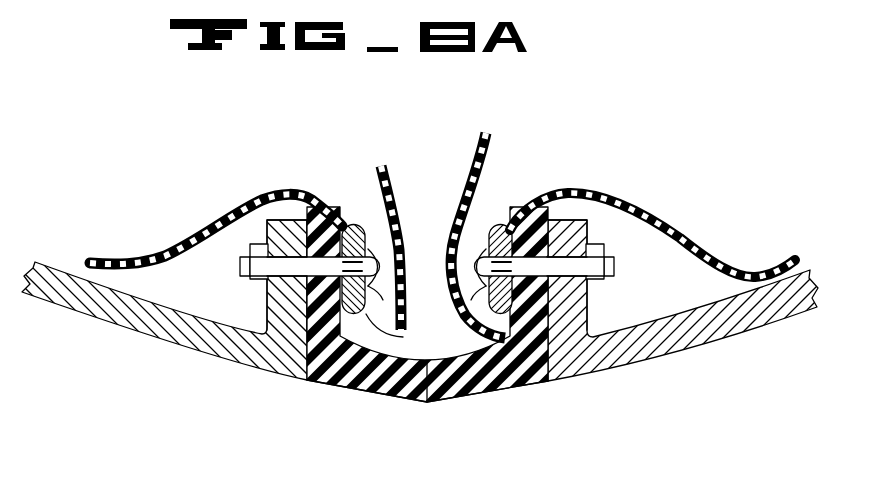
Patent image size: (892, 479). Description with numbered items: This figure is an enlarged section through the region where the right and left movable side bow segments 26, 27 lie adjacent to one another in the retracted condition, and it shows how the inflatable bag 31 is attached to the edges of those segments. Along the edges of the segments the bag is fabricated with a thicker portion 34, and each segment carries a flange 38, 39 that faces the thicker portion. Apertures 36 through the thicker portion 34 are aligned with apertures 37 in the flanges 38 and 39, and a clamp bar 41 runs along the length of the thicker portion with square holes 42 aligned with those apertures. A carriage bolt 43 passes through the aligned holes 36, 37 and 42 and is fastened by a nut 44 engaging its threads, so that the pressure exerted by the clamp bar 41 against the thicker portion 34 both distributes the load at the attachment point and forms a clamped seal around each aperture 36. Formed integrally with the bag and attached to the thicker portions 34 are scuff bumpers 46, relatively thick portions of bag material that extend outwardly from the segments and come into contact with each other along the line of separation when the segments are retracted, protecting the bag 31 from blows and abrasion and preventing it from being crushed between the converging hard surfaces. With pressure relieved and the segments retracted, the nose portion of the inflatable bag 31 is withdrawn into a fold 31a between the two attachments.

The movable side bow segment 26 is at (88, 312).
The movable side bow segment 27 is at (677, 345).
The inflatable bag 31 is at (611, 195).
The fold 31a is at (489, 134).
The thicker portion 34 is at (307, 308).
The aperture 36 is at (352, 226).
The aperture 37 is at (268, 292).
The flange 38 is at (273, 220).
The flange 39 is at (570, 222).
The clamp bar 41 is at (470, 311).
The square hole 42 is at (470, 280).
The carriage bolt 43 is at (483, 247).
The nut 44 is at (252, 245).
The scuff bumper 46 is at (457, 401).